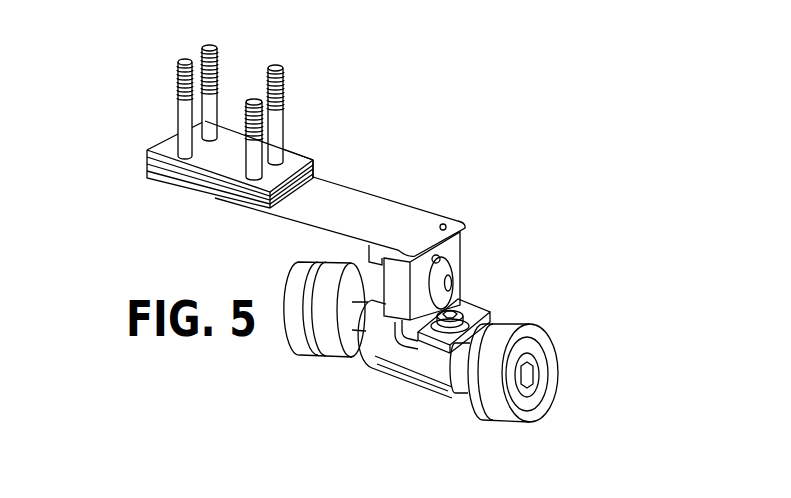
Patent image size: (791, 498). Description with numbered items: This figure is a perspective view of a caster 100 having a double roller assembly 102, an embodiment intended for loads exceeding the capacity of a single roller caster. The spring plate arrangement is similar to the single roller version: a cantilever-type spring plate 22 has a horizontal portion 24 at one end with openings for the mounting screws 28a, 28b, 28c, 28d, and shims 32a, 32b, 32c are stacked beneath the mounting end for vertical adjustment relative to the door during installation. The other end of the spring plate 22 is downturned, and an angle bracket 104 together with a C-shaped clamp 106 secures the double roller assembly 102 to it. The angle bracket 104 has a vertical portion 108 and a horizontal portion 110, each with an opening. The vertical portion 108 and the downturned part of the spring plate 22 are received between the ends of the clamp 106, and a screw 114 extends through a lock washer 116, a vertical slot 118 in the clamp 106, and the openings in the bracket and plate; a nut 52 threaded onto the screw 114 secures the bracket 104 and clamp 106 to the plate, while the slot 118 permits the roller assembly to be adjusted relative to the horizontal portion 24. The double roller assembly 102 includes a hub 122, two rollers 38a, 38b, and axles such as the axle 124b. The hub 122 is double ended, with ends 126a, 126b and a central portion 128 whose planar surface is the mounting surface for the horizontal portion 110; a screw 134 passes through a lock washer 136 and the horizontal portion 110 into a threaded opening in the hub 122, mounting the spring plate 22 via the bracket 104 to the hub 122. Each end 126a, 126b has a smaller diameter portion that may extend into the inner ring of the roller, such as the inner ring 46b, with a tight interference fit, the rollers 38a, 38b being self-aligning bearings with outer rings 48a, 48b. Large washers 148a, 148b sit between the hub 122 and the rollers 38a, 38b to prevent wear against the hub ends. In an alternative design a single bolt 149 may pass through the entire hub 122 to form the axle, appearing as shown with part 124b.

The caster 100 is at (406, 91).
The spring plate 22 is at (401, 195).
The horizontal portion 24 is at (348, 190).
The mounting screw 28a is at (217, 67).
The mounting screw 28b is at (177, 85).
The mounting screw 28c is at (283, 90).
The mounting screw 28d is at (253, 154).
The shim 32a is at (163, 150).
The shim 32b is at (318, 164).
The shim 32c is at (292, 186).
The roller 38a is at (285, 283).
The roller 38b is at (536, 425).
The inner ring 46b is at (542, 405).
The outer ring 48a is at (310, 264).
The outer ring 48b is at (500, 404).
The nut 52 is at (384, 250).
The double roller assembly 102 is at (584, 330).
The angle bracket 104 is at (405, 344).
The C-shaped clamp 106 is at (461, 235).
The vertical portion 108 is at (457, 224).
The horizontal portion 110 is at (478, 313).
The screw 114 is at (452, 272).
The lock washer 116 is at (443, 222).
The vertical slot 118 is at (447, 250).
The hub 122 is at (382, 373).
The axle 124b is at (551, 367).
The hub end 126a is at (345, 328).
The hub end 126b is at (514, 323).
The central portion 128 is at (447, 394).
The screw 134 is at (465, 306).
The lock washer 136 is at (440, 335).
The large washer 148a is at (343, 362).
The large washer 148b is at (471, 398).
The bolt 149 is at (610, 388).